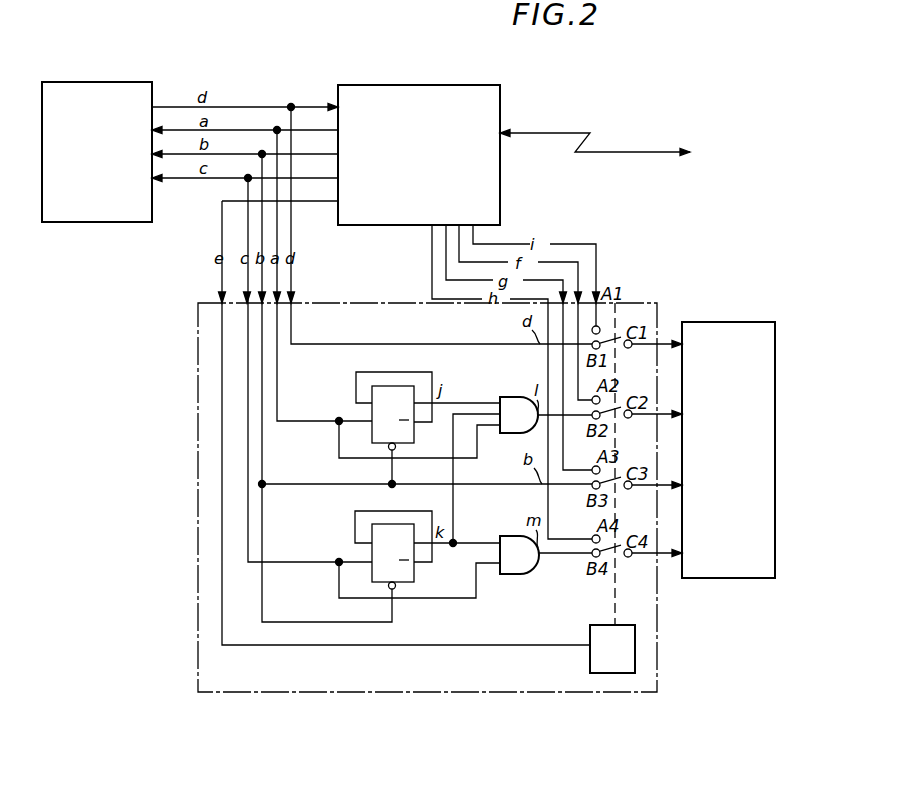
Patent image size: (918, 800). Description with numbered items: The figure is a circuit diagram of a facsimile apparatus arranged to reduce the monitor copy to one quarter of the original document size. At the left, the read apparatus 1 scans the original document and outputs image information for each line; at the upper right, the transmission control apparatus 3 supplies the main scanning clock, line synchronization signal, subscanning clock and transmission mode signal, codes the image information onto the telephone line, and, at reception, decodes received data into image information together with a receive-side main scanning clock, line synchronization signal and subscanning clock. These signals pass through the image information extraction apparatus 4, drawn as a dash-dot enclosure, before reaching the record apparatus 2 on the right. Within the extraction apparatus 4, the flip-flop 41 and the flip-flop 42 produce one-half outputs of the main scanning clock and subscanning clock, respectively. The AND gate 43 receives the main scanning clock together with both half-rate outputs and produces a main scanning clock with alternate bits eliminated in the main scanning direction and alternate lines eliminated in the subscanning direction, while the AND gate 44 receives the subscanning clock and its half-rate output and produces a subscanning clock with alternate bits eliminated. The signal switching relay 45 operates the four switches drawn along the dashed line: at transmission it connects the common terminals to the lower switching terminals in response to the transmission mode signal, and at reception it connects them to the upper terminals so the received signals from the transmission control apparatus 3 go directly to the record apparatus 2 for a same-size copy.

The read apparatus 1 is at (105, 82).
The record apparatus 2 is at (723, 322).
The transmission control apparatus 3 is at (427, 85).
The image information extraction apparatus 4 is at (368, 303).
The flip-flop 41 is at (372, 395).
The flip-flop 42 is at (372, 533).
The AND gate 43 is at (512, 397).
The AND gate 44 is at (512, 536).
The signal switching relay 45 is at (590, 633).